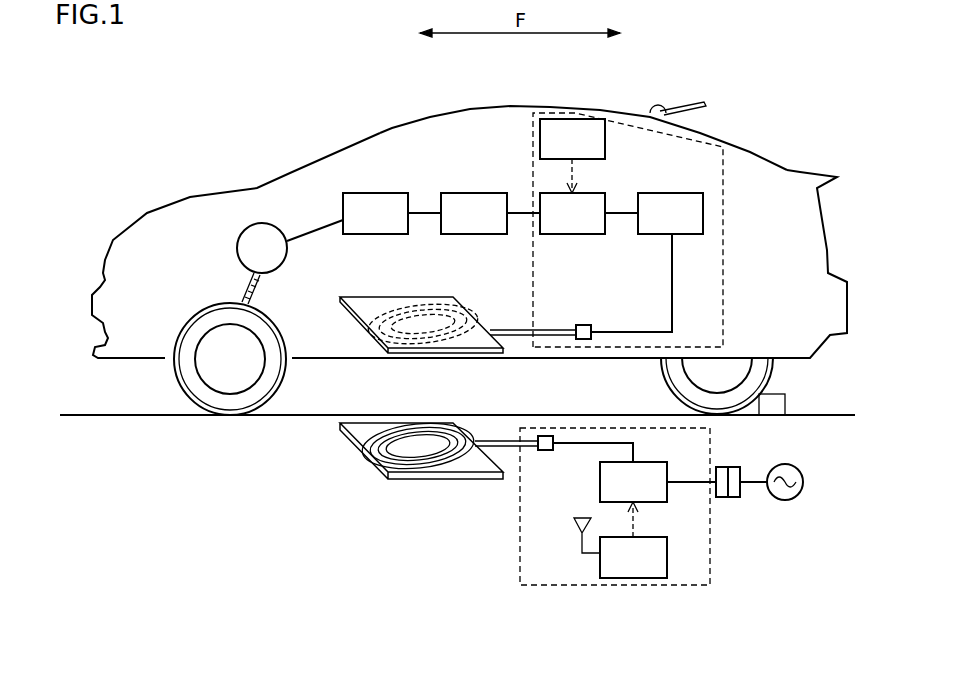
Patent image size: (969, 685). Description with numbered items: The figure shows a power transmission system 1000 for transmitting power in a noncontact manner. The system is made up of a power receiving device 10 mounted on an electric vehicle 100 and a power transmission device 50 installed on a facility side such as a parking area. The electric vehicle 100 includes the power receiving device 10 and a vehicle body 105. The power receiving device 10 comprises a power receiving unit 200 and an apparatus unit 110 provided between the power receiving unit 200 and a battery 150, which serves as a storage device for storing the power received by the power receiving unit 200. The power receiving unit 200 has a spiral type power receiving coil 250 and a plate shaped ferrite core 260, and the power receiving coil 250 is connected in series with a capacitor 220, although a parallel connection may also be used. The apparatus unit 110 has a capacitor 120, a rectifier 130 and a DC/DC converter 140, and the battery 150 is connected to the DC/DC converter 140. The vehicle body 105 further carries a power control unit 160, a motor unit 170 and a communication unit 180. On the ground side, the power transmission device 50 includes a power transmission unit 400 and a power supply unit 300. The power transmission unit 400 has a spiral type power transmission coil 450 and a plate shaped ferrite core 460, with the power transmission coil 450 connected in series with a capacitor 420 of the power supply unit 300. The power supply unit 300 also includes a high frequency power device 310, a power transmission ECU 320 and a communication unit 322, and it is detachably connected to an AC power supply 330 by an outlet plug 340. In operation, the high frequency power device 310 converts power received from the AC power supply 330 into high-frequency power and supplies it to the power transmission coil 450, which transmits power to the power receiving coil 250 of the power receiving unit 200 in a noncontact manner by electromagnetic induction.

The power transmission system 1000 is at (172, 72).
The electric vehicle 100 is at (300, 158).
The vehicle body 105 is at (510, 106).
The communication unit 180 is at (688, 105).
The motor unit 170 is at (270, 224).
The power receiving device 10 is at (500, 263).
The apparatus unit 110 is at (723, 360).
The capacitor 120 is at (605, 139).
The rectifier 130 is at (689, 193).
The DC/DC converter 140 is at (580, 193).
The battery 150 is at (478, 193).
The power control unit 160 is at (382, 193).
The power receiving unit 200 is at (404, 342).
The power receiving coil 250 is at (342, 300).
The ferrite core 260 is at (385, 349).
The capacitor 220 is at (588, 325).
The power transmission device 50 is at (497, 537).
The power transmission unit 400 is at (400, 523).
The power transmission coil 450 is at (390, 475).
The ferrite core 460 is at (346, 425).
The capacitor 420 is at (545, 450).
The power supply unit 300 is at (615, 528).
The high frequency power device 310 is at (648, 462).
The power transmission ECU 320 is at (648, 537).
The communication unit 322 is at (567, 549).
The AC power supply 330 is at (797, 468).
The outlet plug 340 is at (733, 497).